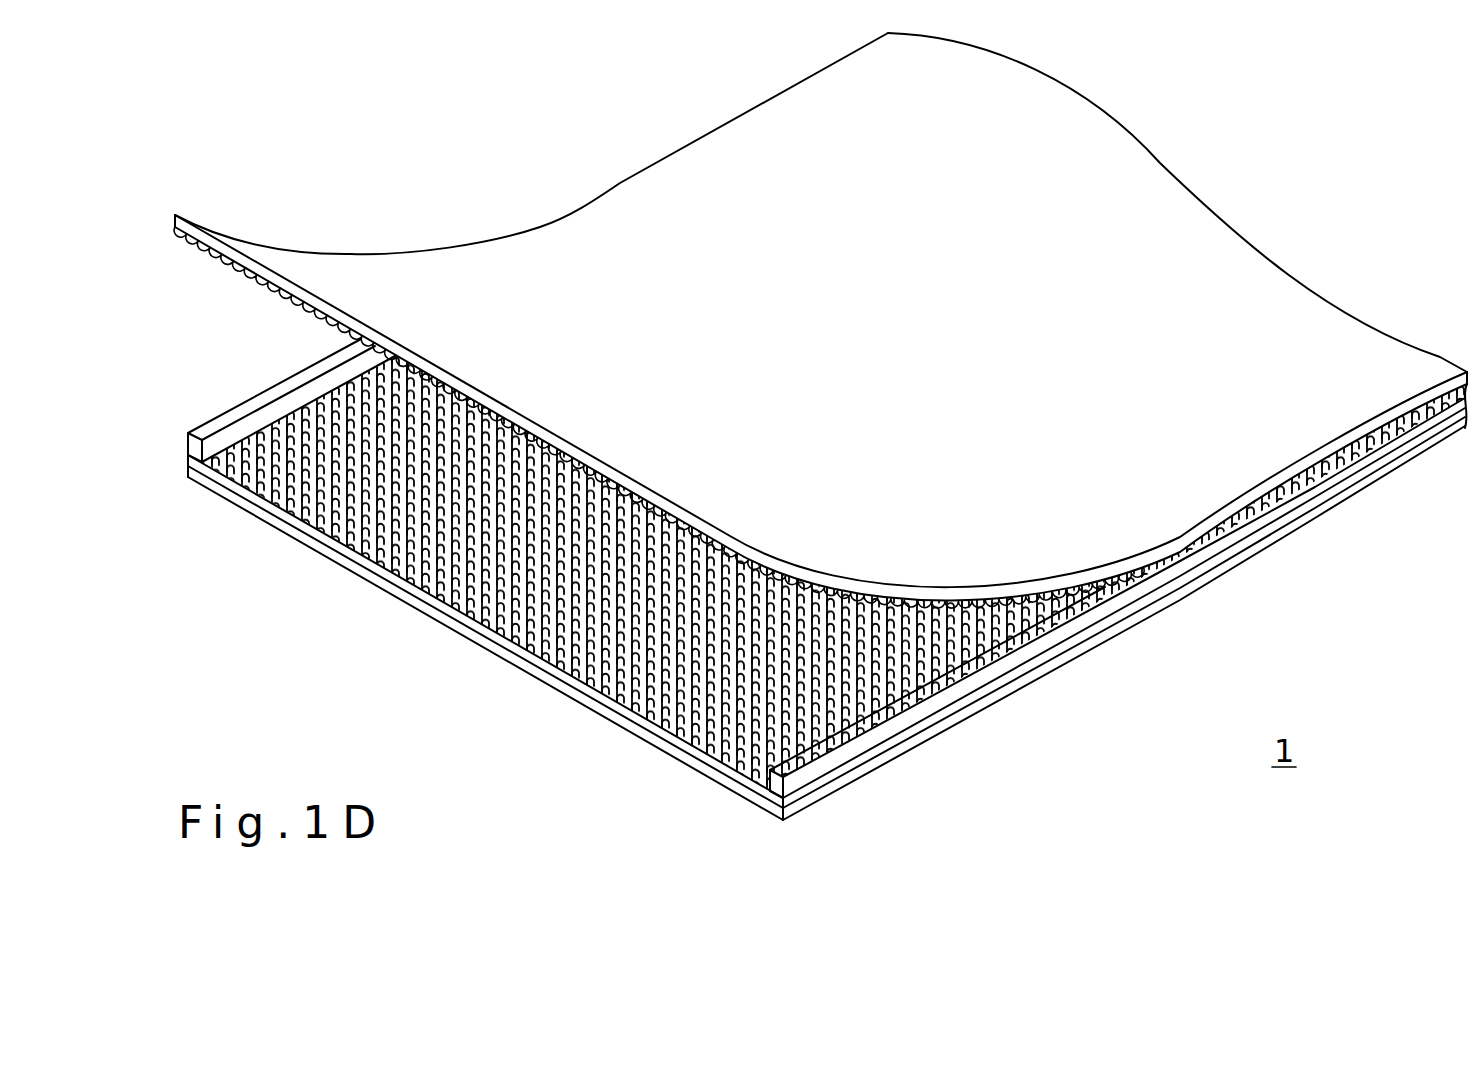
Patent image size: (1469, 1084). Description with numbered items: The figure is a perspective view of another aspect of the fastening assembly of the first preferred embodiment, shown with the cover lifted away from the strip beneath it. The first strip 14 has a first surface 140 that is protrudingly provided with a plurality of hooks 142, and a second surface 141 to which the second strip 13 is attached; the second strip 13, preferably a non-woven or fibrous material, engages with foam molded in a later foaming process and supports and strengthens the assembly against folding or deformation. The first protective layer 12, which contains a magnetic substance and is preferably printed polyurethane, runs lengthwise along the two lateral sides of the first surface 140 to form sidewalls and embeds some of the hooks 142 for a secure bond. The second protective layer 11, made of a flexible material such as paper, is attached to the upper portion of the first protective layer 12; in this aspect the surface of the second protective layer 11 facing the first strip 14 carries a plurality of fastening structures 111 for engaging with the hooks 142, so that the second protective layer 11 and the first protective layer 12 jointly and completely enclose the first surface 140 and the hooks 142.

The second protective layer 11 is at (453, 270).
The fastening structures 111 is at (213, 250).
The first protective layer 12 is at (950, 690).
The second strip 13 is at (213, 487).
The first strip 14 is at (188, 445).
The first surface 140 is at (375, 548).
The second surface 141 is at (850, 778).
The hooks 142 is at (310, 420).